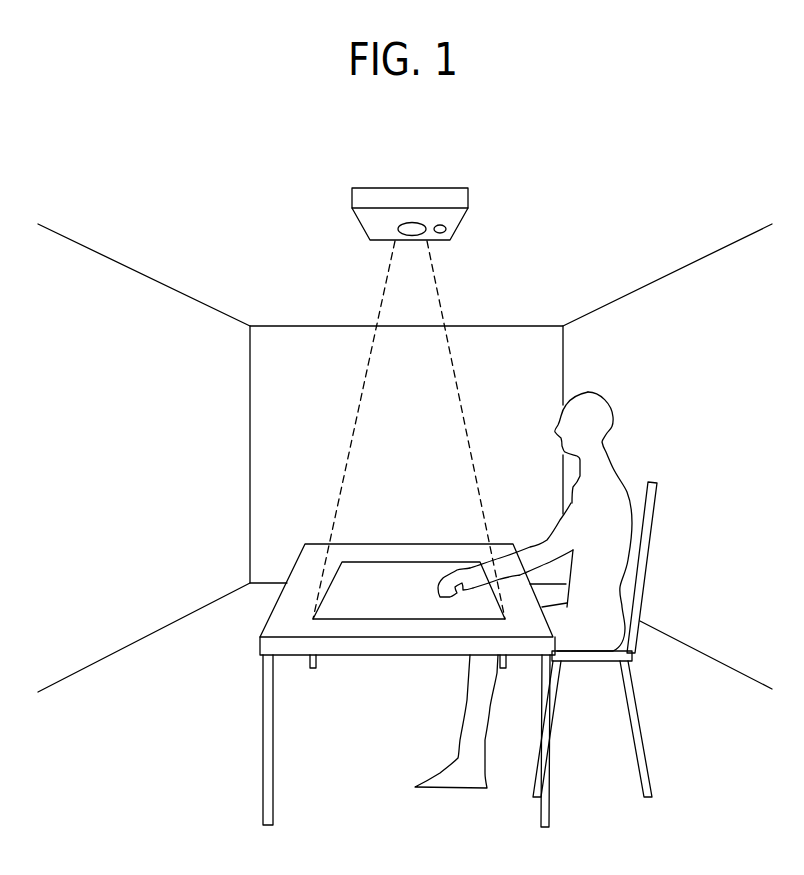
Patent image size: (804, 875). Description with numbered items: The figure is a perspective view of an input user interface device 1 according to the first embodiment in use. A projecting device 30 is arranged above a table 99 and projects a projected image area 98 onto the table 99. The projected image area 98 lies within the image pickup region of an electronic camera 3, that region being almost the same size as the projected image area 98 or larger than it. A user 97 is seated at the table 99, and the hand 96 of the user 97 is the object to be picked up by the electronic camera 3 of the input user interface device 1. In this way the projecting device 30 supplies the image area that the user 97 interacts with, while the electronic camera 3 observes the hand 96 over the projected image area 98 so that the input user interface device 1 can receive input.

The input user interface device 1 is at (440, 198).
The projecting device 30 is at (410, 226).
The electronic camera 3 is at (445, 235).
The user 97 is at (600, 403).
The projected image area 98 is at (401, 560).
The hand 96 is at (442, 596).
The table 99 is at (262, 642).